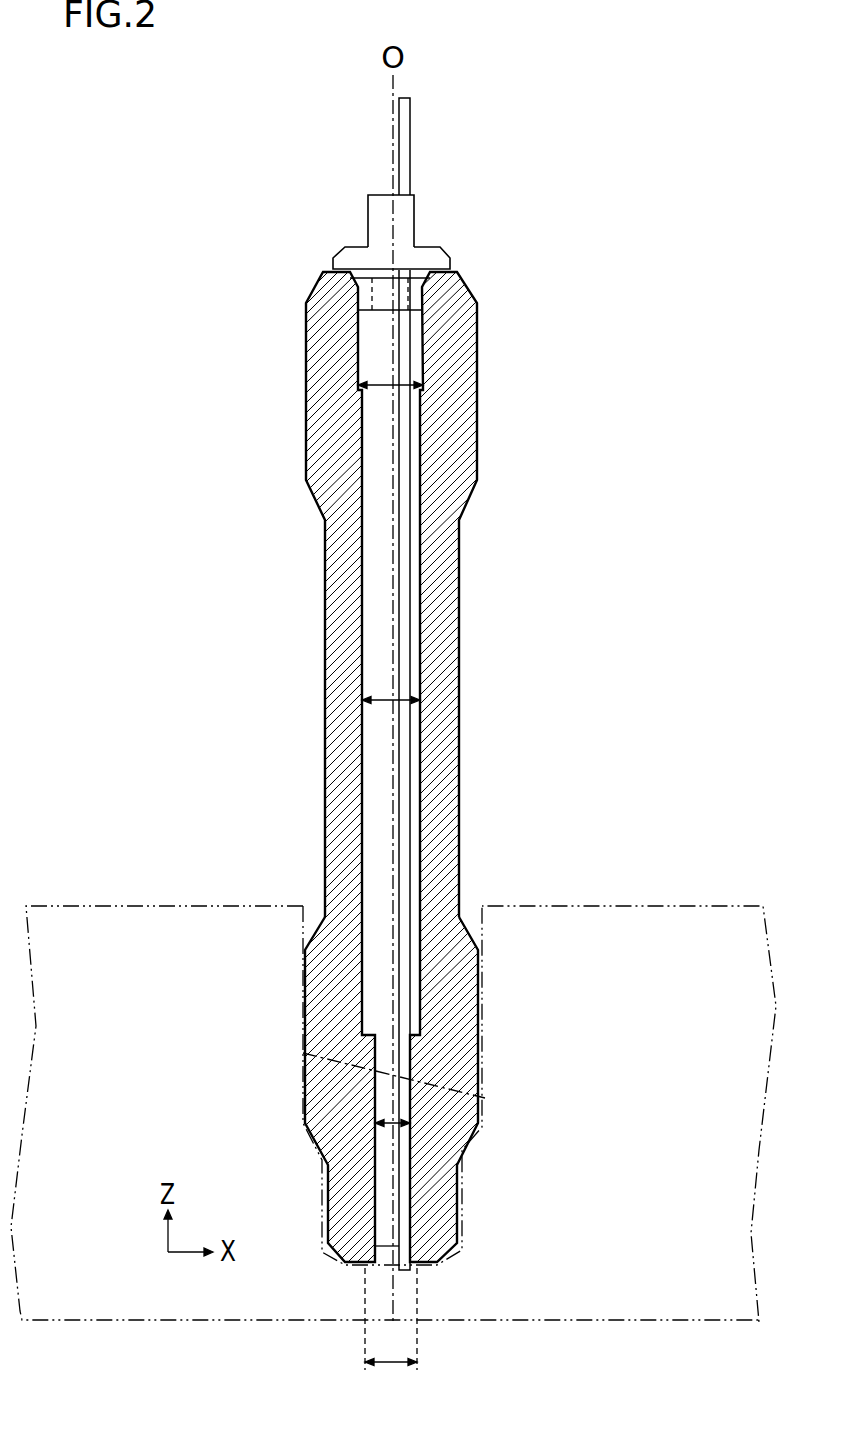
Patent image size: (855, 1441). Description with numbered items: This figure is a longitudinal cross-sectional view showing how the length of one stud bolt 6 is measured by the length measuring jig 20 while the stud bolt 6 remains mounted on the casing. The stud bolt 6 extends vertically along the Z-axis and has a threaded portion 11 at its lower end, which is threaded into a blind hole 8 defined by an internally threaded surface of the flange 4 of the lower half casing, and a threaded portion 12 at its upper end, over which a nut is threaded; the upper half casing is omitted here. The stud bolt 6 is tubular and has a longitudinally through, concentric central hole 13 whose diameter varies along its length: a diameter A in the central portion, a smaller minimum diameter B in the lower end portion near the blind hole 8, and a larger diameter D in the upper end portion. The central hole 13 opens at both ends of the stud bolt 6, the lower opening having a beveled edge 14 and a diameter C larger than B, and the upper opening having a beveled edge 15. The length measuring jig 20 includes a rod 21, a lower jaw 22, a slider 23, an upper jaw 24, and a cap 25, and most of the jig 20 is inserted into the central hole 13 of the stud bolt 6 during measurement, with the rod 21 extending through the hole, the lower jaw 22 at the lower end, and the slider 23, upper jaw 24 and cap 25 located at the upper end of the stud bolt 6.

The flange 4 is at (681, 906).
The stud bolt 6 is at (325, 690).
The blind hole 8 is at (403, 1085).
The threaded portion 11 is at (478, 1041).
The threaded portion 12 is at (478, 397).
The central hole 13 is at (363, 590).
The beveled edge 14 is at (374, 1262).
The beveled edge 15 is at (433, 270).
The length measuring jig 20 is at (372, 162).
The rod 21 is at (410, 157).
The lower jaw 22 is at (406, 1268).
The slider 23 is at (414, 207).
The upper jaw 24 is at (350, 247).
The cap 25 is at (383, 312).